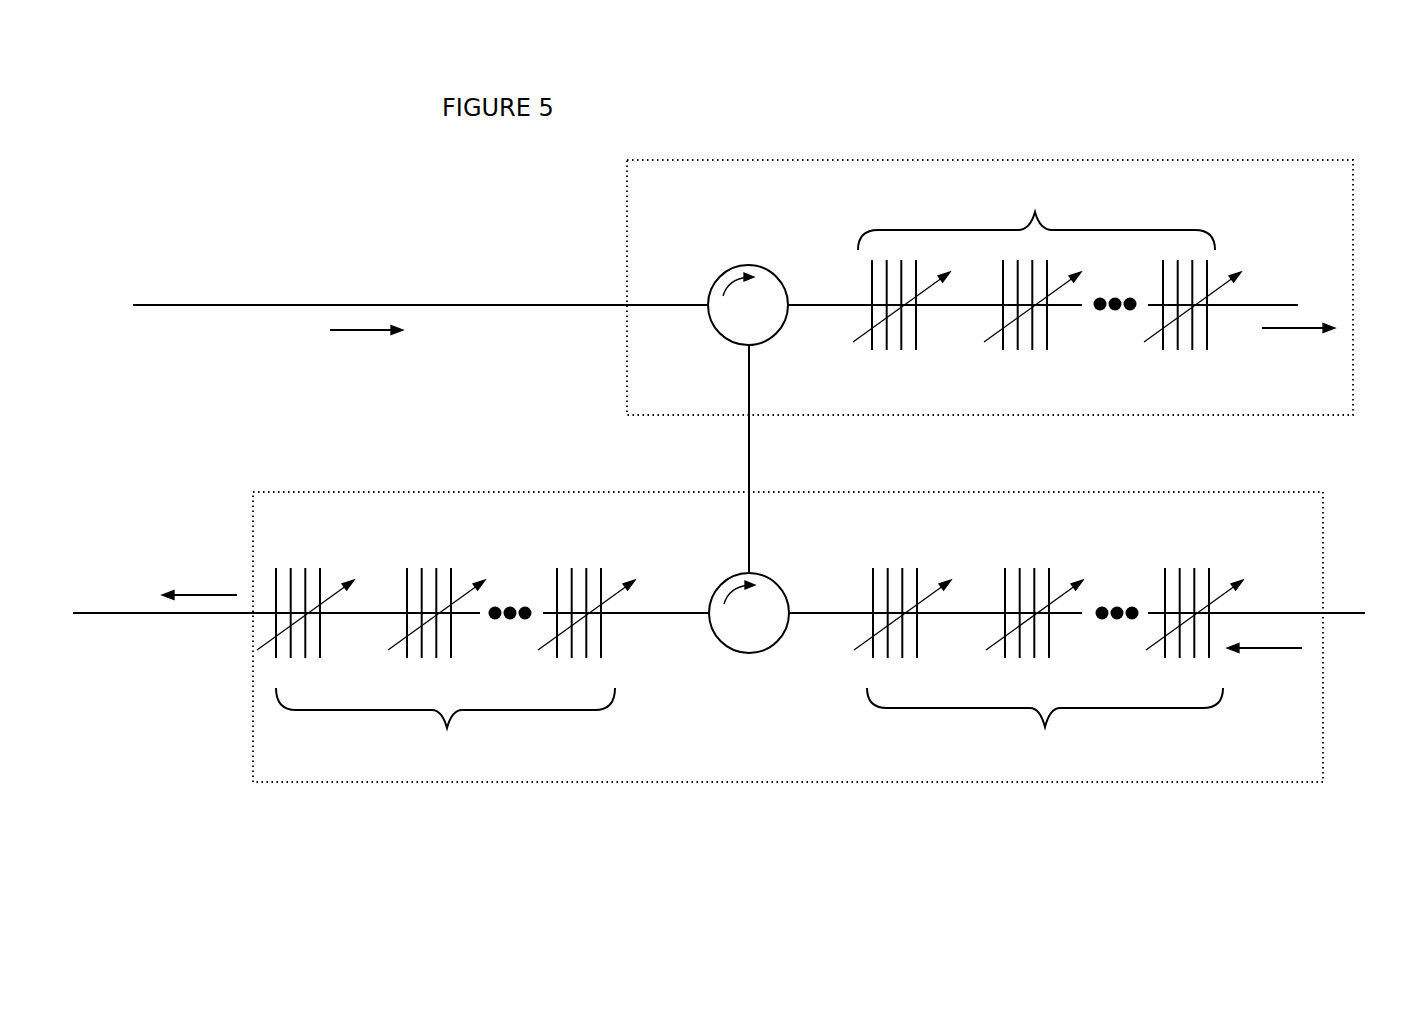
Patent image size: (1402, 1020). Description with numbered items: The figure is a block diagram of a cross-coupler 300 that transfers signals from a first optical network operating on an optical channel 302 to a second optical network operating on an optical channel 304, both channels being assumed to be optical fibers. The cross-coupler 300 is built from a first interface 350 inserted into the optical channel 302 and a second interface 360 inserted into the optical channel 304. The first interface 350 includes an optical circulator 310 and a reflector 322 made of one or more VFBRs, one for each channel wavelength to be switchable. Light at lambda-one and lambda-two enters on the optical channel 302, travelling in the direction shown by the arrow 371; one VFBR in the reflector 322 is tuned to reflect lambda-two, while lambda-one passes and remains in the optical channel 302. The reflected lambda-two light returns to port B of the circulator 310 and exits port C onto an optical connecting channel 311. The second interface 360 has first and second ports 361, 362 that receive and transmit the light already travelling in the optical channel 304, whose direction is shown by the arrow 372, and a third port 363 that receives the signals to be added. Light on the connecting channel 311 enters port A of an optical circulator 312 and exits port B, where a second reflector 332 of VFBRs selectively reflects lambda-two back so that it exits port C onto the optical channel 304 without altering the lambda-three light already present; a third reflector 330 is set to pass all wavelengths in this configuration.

The cross-coupler 300 is at (242, 244).
The optical channel 302 is at (526, 305).
The optical channel 304 is at (105, 613).
The optical circulator 310 is at (720, 332).
The optical connecting channel 311 is at (749, 440).
The optical circulator 312 is at (753, 653).
The reflector 322 is at (1043, 264).
The third reflector 330 is at (481, 665).
The second reflector 332 is at (1056, 667).
The first interface 350 is at (768, 160).
The second interface 360 is at (722, 782).
The first port 361 is at (232, 613).
The second port 362 is at (1340, 613).
The third port 363 is at (749, 482).
The arrow 371 is at (362, 333).
The arrow 372 is at (1282, 652).